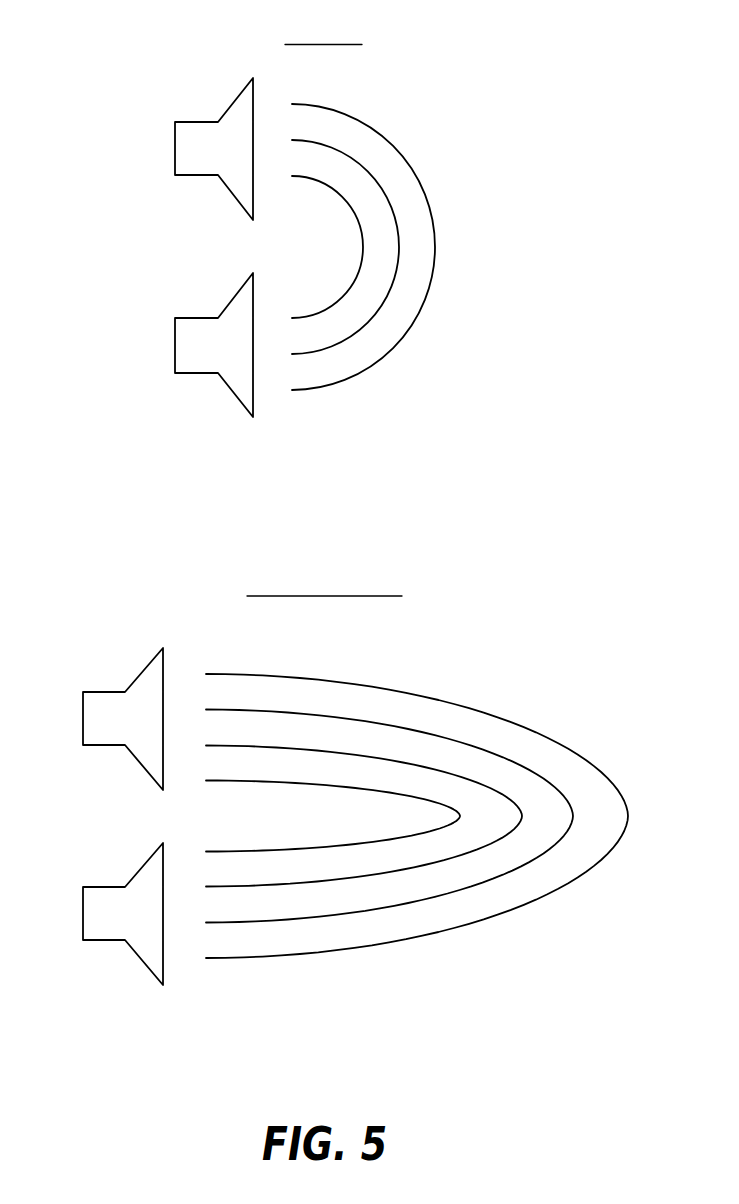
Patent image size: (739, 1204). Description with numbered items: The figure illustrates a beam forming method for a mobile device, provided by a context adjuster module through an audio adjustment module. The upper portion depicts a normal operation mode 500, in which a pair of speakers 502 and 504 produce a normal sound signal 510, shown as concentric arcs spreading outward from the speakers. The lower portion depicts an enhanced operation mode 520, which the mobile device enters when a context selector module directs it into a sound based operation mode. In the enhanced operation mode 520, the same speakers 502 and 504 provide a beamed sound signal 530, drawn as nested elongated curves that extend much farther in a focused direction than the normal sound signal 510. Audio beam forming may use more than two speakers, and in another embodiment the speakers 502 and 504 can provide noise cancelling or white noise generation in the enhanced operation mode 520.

The normal operation mode 500 is at (343, 490).
The speaker 502 is at (192, 122).
The speaker 504 is at (192, 317).
The normal sound signal 510 is at (365, 124).
The enhanced operation mode 520 is at (345, 1040).
The beamed sound signal 530 is at (421, 695).